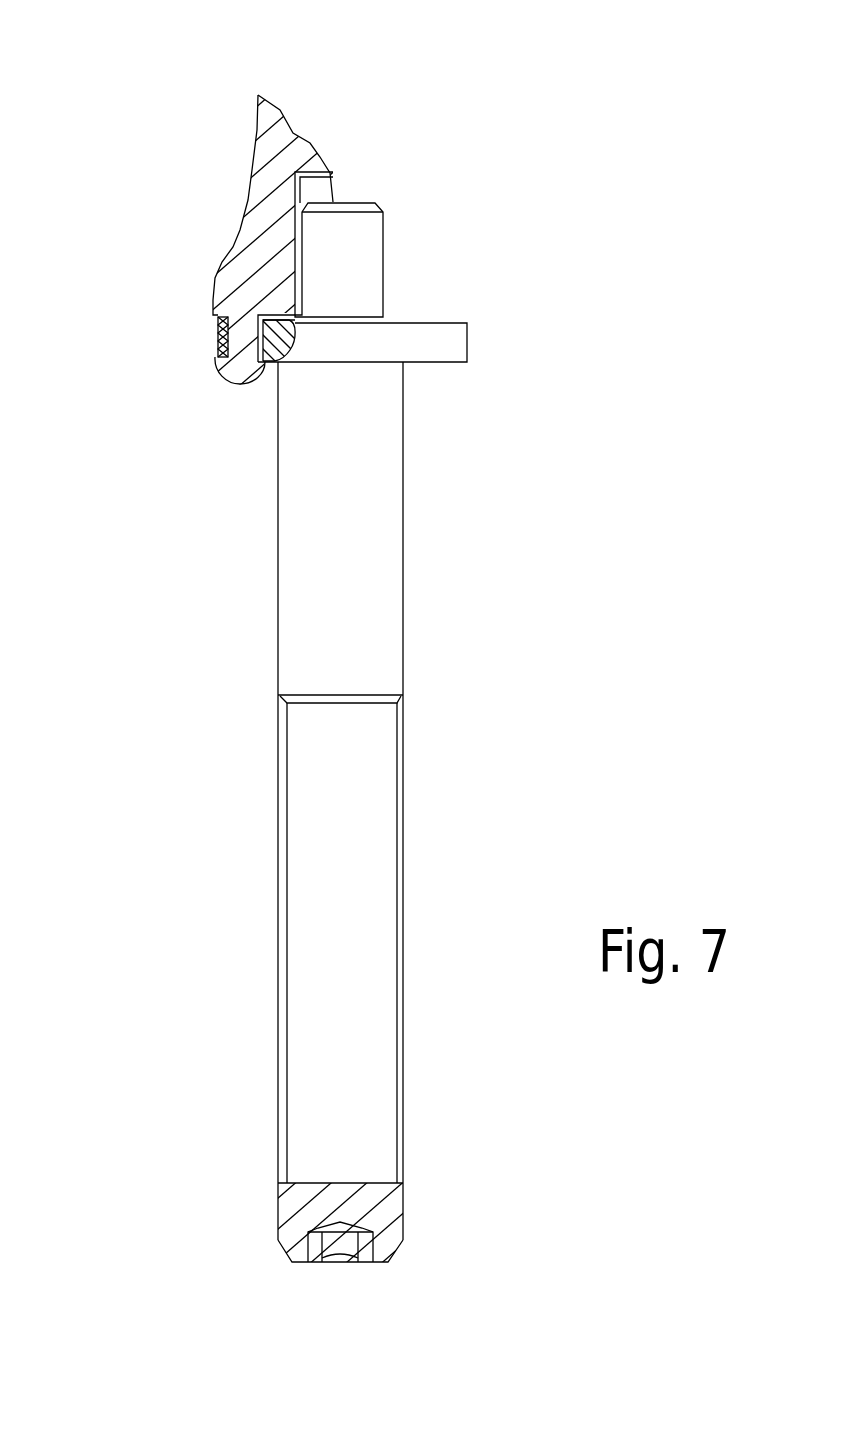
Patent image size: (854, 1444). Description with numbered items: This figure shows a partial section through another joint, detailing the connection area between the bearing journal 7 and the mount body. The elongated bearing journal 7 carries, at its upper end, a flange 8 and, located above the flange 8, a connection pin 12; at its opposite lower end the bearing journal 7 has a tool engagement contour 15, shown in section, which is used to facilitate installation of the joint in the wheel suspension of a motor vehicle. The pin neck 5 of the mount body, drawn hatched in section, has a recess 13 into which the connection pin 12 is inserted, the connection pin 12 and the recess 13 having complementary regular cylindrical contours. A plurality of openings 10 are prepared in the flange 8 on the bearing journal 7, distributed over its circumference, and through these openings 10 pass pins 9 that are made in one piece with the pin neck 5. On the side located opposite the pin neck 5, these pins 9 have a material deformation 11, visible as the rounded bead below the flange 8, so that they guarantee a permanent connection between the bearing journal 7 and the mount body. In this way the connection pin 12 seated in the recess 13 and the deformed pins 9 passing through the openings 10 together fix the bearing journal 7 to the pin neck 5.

The pin neck 5 is at (270, 165).
The bearing journal 7 is at (370, 522).
The flange 8 is at (450, 340).
The pins 9 is at (242, 347).
The openings 10 is at (210, 311).
The material deformation 11 is at (238, 383).
The connection pin 12 is at (345, 191).
The recess 13 is at (317, 188).
The tool engagement contour 15 is at (340, 1270).